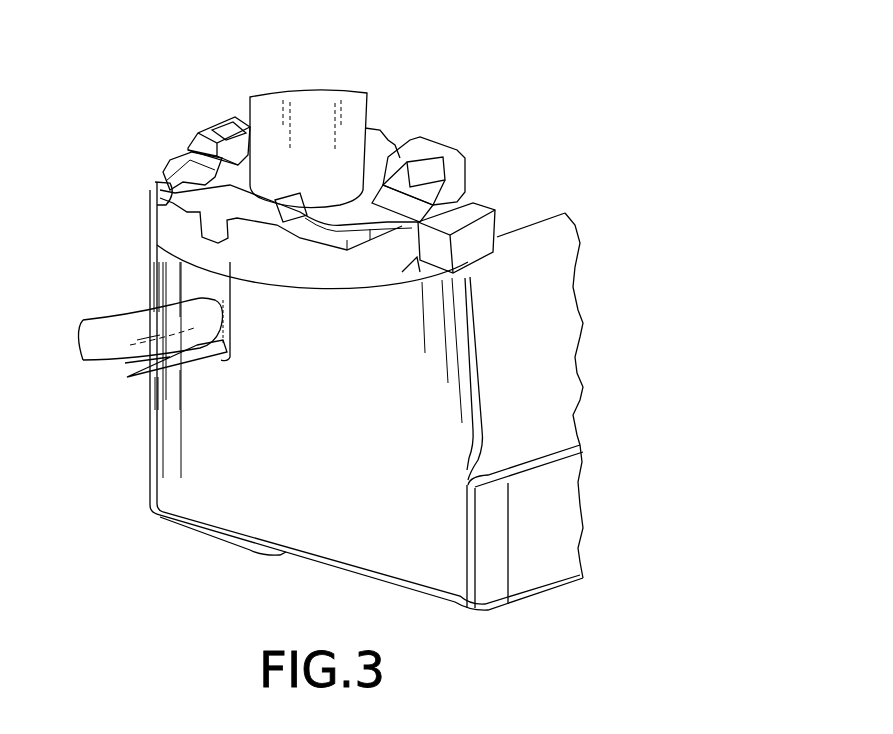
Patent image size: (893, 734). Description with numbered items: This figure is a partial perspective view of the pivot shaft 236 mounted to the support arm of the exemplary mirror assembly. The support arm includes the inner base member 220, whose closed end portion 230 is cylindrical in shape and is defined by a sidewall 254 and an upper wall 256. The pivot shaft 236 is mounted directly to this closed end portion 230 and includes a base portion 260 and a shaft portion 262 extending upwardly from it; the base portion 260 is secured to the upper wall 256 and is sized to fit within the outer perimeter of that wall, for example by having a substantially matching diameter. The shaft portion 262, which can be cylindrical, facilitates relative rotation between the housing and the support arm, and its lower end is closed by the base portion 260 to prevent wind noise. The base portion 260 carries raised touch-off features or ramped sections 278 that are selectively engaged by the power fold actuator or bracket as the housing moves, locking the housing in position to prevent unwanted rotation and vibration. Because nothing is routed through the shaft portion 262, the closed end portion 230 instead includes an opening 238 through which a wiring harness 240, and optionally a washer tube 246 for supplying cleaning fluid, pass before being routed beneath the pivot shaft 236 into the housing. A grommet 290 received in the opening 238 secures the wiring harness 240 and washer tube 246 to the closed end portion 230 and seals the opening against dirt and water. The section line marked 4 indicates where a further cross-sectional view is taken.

The section line 4- 4 is at (145, 267).
The inner base member 220 is at (367, 537).
The closed end portion 230 is at (433, 320).
The pivot shaft 236 is at (473, 117).
The opening 238 is at (222, 374).
The wiring harness 240 is at (110, 347).
The washer tube 246 is at (163, 402).
The sidewall 254 is at (193, 445).
The upper wall 256 is at (293, 297).
The base portion 260 is at (318, 267).
The shaft portion 262 is at (300, 110).
The ramped sections 278 is at (210, 128).
The grommet 290 is at (193, 288).